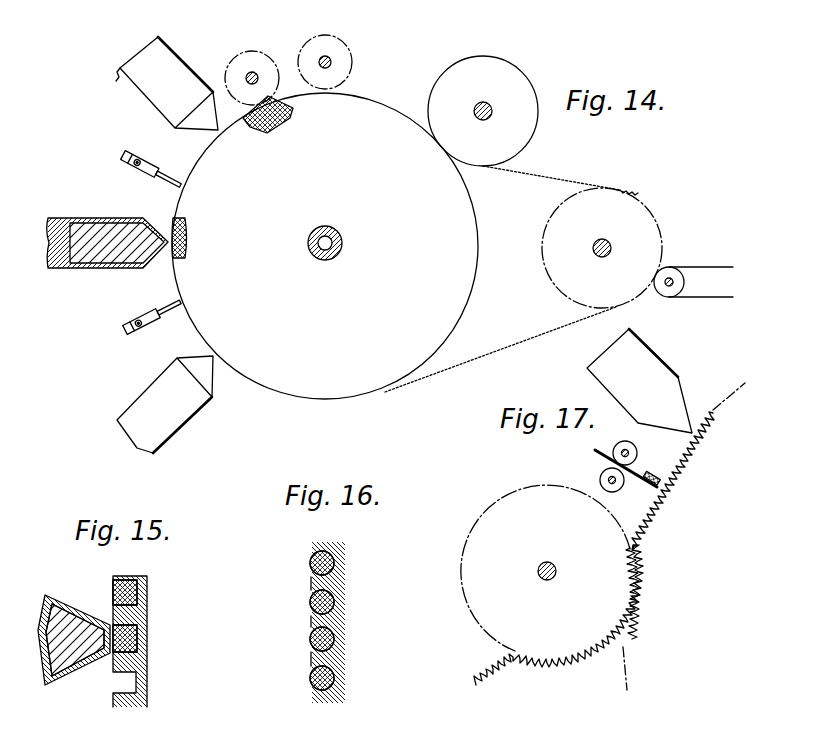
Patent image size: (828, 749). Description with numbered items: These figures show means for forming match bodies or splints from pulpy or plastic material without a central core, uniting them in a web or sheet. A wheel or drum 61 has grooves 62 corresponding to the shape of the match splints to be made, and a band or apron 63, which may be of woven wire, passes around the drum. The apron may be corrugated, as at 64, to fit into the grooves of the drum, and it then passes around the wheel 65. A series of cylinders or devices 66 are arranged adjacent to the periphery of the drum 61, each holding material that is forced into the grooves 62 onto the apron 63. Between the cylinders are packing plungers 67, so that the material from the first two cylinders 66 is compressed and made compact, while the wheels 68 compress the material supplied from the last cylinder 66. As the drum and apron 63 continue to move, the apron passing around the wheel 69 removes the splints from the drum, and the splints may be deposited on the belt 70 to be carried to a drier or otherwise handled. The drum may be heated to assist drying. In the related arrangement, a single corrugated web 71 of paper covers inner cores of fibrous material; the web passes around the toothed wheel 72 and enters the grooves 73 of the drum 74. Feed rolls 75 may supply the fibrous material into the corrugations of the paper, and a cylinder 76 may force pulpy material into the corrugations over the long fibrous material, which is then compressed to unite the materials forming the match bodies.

In FIG. 14, the wheel or drum 61 is at (478, 257).
In FIG. 15, the wheel or drum 61 is at (147, 640).
In FIG. 16, the wheel or drum 61 is at (343, 585).
In FIG. 14, the grooves 62 is at (173, 230).
In FIG. 15, the grooves 62 is at (145, 582).
In FIG. 16, the grooves 62 is at (333, 602).
In FIG. 14, the band or apron 63 is at (487, 355).
In FIG. 15, the band or apron 63 is at (112, 667).
In FIG. 14, the corrugated portion 64 is at (556, 182).
In FIG. 15, the corrugated portion 64 is at (118, 693).
In FIG. 14, the wheel 65 is at (563, 207).
In FIG. 14, the cylinders or devices 66 is at (148, 88).
In FIG. 15, the cylinders or devices 66 is at (63, 600).
In FIG. 14, the packing plungers 67 is at (167, 177).
In FIG. 14, the wheels 68 is at (260, 58).
In FIG. 16, the wheels 68 is at (303, 527).
In FIG. 14, the wheel 69 is at (470, 66).
In FIG. 14, the belt 70 is at (698, 268).
In FIG. 17, the corrugated web 71 is at (492, 667).
In FIG. 17, the toothed wheel 72 is at (470, 588).
In FIG. 17, the grooves 73 is at (635, 627).
In FIG. 17, the drum 74 is at (623, 665).
In FIG. 17, the rollers 75 is at (595, 450).
In FIG. 17, the cylinder 76 is at (677, 377).